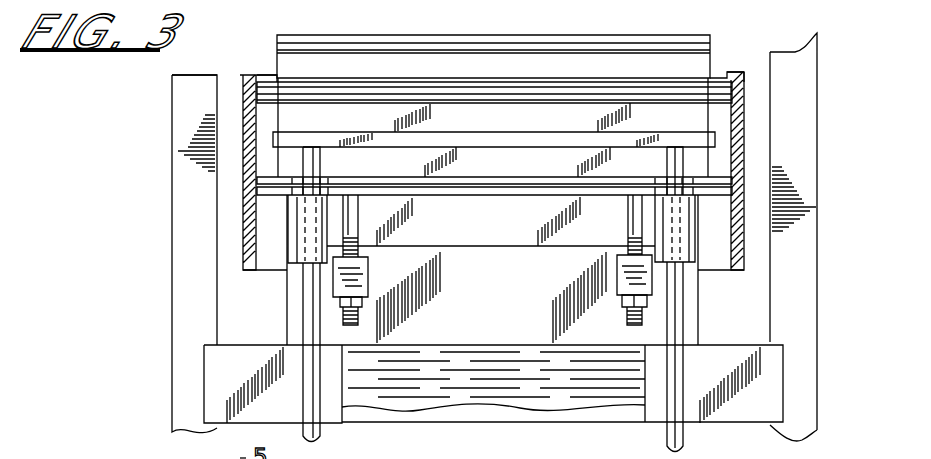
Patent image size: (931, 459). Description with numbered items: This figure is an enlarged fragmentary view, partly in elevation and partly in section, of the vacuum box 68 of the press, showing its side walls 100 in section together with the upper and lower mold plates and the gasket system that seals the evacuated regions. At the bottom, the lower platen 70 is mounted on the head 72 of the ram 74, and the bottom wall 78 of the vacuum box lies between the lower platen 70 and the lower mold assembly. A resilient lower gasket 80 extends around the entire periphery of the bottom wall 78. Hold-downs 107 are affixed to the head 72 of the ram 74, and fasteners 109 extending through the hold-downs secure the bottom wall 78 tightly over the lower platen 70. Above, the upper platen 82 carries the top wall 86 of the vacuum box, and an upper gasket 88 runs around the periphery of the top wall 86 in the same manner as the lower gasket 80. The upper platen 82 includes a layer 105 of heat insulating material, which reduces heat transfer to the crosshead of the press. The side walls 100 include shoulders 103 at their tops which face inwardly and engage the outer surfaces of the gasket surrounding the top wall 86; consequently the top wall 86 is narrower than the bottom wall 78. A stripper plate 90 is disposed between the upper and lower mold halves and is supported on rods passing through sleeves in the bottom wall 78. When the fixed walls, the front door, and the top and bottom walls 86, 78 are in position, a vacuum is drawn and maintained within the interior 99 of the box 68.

The vacuum box 68 is at (748, 176).
The lower platen 70 is at (617, 230).
The head 72 is at (498, 308).
The ram 74 is at (590, 385).
The bottom wall 78 is at (258, 178).
The lower gasket 80 is at (258, 190).
The upper platen 82 is at (277, 68).
The top wall 86 is at (215, 70).
The upper gasket 88 is at (258, 97).
The stripper plate 90 is at (715, 138).
The interior 99 is at (235, 143).
The side walls 100 is at (247, 235).
The shoulders 103 is at (720, 75).
The layer of heat insulating material 105 is at (541, 48).
The hold-downs 107 is at (357, 285).
The fasteners 109 is at (350, 218).